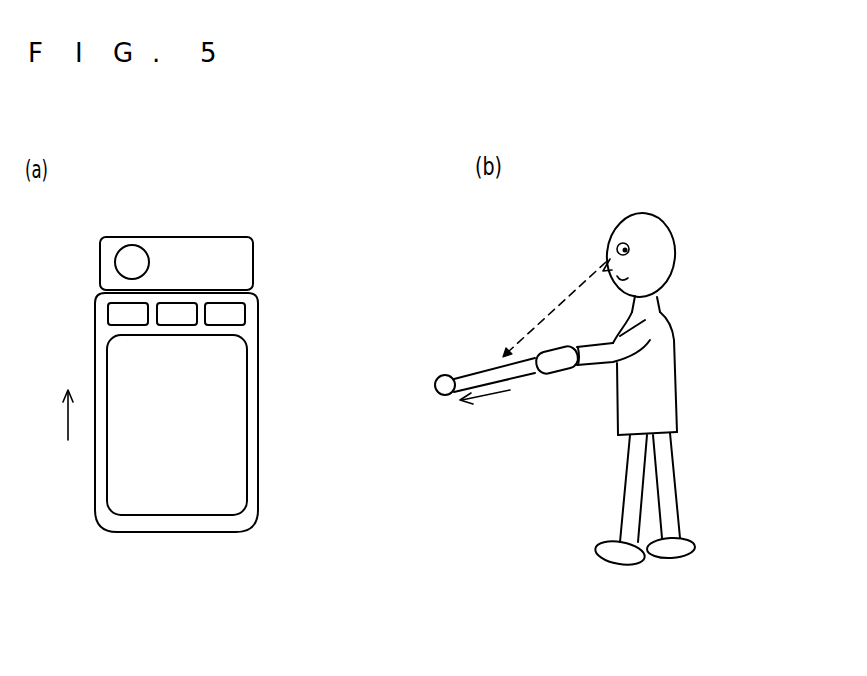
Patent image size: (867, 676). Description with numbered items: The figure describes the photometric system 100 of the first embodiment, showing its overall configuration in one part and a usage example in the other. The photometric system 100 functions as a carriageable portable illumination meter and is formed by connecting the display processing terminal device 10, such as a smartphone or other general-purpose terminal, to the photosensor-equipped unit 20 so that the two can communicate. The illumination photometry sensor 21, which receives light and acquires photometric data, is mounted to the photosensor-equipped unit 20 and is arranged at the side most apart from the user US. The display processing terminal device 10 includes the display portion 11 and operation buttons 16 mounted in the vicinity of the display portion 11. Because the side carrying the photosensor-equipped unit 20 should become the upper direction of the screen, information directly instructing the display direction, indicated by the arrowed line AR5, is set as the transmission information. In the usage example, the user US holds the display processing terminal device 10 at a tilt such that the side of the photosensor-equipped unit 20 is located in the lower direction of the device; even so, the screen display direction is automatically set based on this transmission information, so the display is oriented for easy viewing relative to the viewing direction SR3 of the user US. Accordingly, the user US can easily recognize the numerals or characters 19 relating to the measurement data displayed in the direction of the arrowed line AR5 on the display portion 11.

The photometric system 100 is at (235, 192).
The display processing terminal device 10 is at (259, 505).
The display portion 11 is at (238, 405).
The operation buttons 16 is at (127, 310).
The numerals or characters 19 is at (218, 427).
The photosensor-equipped unit 20 is at (259, 264).
The illumination photometry sensor 21 is at (133, 263).
The arrowed line AR5 is at (488, 422).
The user US is at (673, 227).
The viewing direction SR3 is at (560, 303).